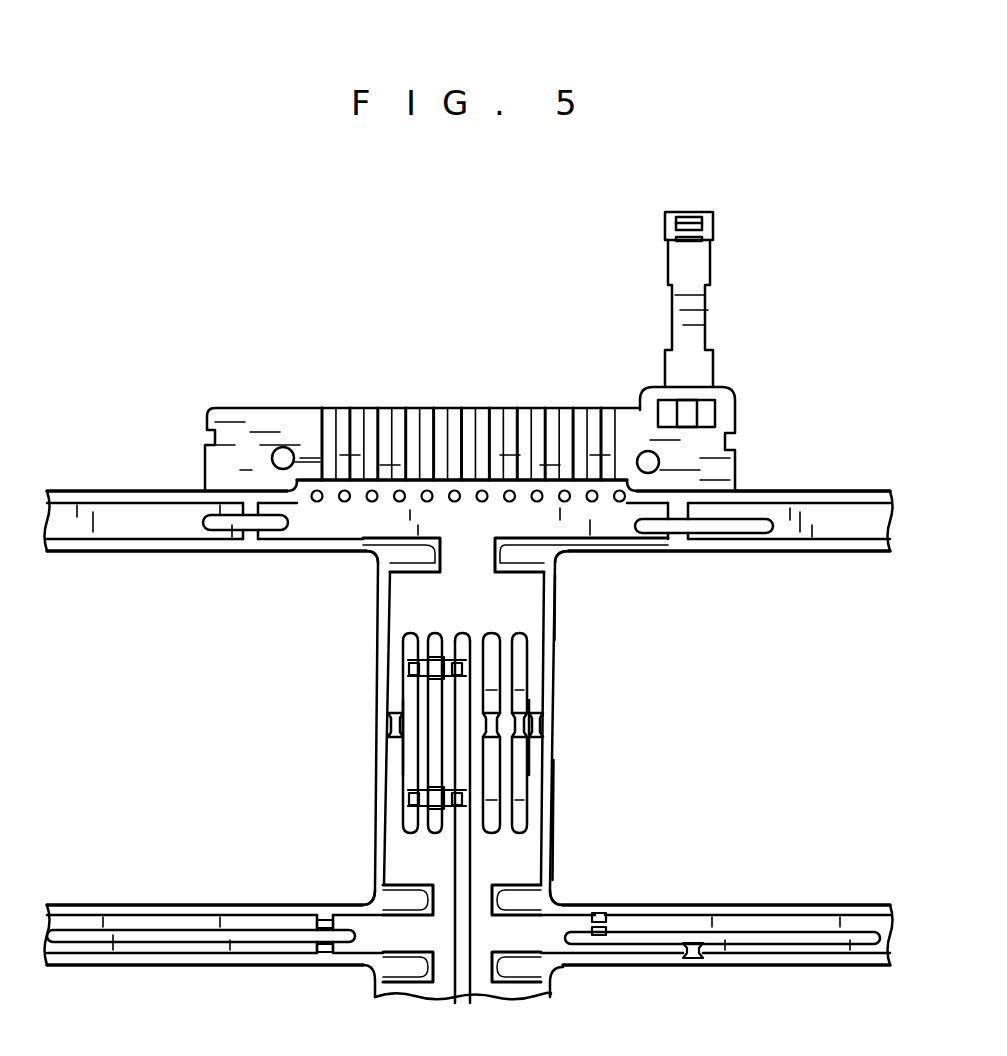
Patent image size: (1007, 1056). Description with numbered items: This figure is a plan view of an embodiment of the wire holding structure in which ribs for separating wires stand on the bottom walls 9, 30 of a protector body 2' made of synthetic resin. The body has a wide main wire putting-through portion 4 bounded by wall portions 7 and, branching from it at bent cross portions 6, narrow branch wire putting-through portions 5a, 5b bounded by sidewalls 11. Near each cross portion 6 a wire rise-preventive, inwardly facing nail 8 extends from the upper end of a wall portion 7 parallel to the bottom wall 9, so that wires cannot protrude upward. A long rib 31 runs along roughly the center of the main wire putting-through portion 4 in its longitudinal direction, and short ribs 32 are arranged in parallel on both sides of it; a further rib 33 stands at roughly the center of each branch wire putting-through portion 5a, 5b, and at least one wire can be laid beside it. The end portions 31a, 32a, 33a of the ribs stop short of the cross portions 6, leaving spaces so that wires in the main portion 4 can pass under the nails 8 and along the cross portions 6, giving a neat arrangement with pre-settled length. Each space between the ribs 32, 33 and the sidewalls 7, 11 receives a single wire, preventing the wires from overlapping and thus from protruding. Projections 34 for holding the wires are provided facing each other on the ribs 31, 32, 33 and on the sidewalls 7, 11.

The protector body 2' is at (467, 481).
The main wire putting-through portion 4 is at (377, 660).
The branch wire putting-through portion 5a is at (733, 557).
The branch wire putting-through portion 5b is at (117, 903).
The cross portion 6 is at (560, 566).
The wall portion 7 is at (552, 785).
The wire rise-preventive nail 8 is at (410, 576).
The bottom wall 9 is at (556, 600).
The sidewall 11 is at (847, 557).
The bottom wall 30 is at (612, 528).
The long rib 31 is at (470, 858).
The end portion of rib 31a is at (463, 633).
The short rib 32 is at (530, 683).
The end portion of rib 32a is at (530, 636).
The rib 33 is at (756, 548).
The end portion of rib 33a is at (363, 967).
The projection 34 is at (541, 727).